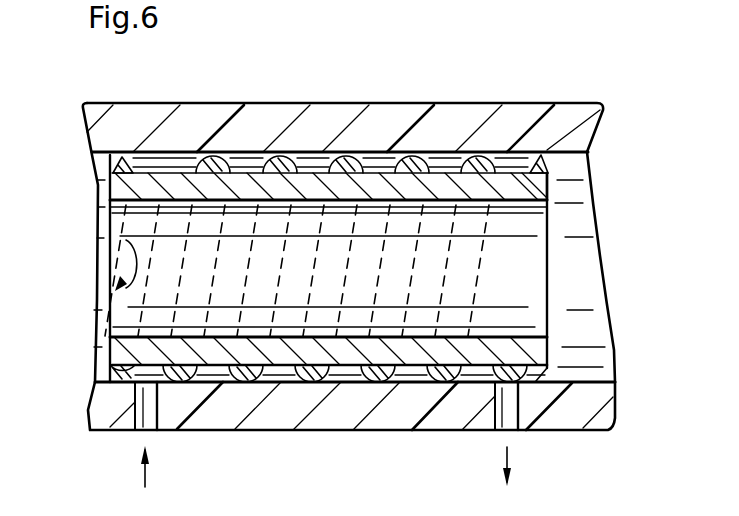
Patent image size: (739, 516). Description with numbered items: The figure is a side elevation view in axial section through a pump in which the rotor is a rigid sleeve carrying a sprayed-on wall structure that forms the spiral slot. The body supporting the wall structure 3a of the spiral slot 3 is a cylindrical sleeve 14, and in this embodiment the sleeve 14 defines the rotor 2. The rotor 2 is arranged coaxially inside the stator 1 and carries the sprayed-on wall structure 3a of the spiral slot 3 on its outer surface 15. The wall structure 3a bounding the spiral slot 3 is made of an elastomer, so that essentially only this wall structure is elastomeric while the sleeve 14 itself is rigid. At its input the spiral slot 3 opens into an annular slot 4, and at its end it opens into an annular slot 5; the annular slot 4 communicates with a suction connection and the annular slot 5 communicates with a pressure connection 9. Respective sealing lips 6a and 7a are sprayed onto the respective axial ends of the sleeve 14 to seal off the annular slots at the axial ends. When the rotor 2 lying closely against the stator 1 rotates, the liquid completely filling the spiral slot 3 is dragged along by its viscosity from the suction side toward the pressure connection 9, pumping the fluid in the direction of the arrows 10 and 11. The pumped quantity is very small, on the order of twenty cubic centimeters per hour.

The stator 1 is at (392, 418).
The rotor 2 is at (553, 312).
The spiral slot 3 is at (314, 170).
The wall structure 3a is at (198, 163).
The annular slot 4 is at (152, 166).
The annular slot 5 is at (500, 160).
The sealing lip 6a is at (113, 167).
The sealing lip 7a is at (540, 158).
The pressure connection 9 is at (513, 407).
The arrow 10 is at (144, 472).
The arrow 11 is at (508, 448).
The cylindrical sleeve 14 is at (538, 187).
The outer surface 15 is at (498, 370).